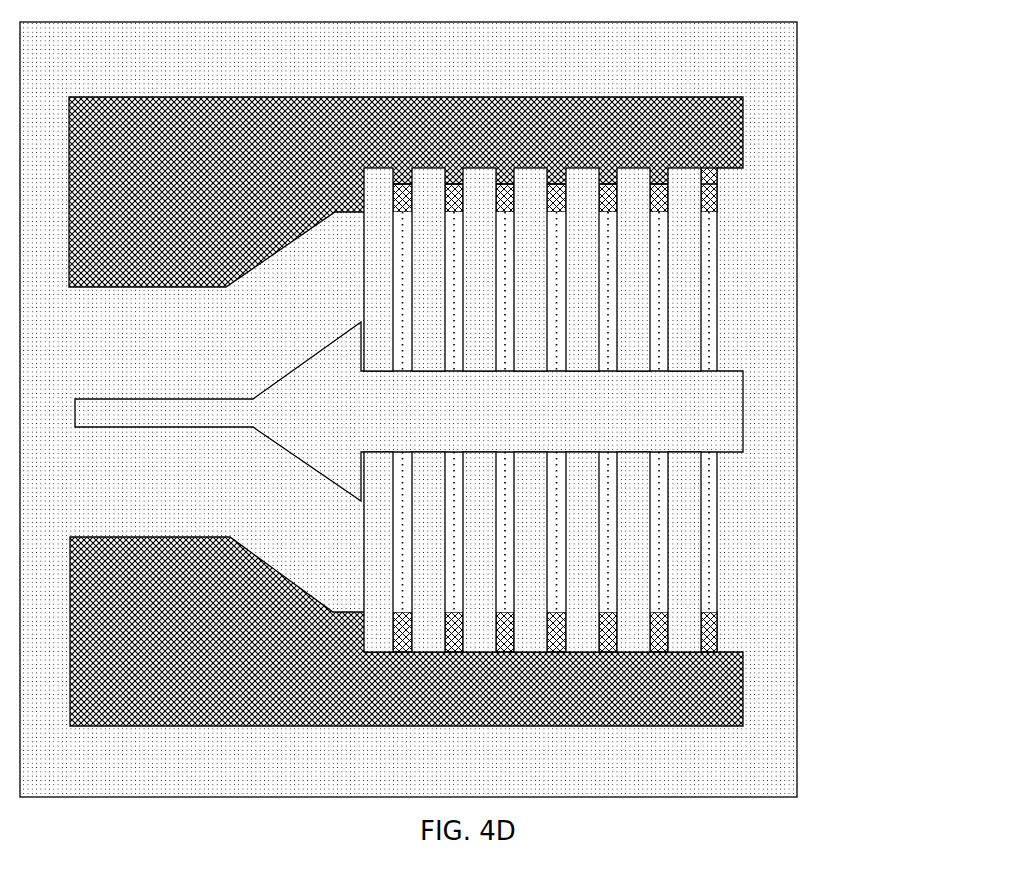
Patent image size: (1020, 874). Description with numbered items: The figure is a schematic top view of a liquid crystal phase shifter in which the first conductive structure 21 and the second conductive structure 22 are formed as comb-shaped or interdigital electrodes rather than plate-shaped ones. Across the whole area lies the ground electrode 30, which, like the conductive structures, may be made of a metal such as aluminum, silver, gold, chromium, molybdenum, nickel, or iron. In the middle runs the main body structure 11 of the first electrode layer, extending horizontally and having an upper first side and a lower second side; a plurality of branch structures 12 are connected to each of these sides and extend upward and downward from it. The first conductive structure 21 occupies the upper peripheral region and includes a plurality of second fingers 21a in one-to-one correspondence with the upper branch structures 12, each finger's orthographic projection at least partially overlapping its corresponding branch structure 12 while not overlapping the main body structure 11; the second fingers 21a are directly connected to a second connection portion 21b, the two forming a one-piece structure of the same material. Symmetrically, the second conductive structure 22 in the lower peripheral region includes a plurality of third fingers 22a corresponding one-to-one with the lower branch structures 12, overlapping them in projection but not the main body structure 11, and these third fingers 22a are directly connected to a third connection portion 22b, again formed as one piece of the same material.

The ground electrode 30 is at (768, 322).
The main body structure 11 is at (718, 412).
The branch structures 12 is at (720, 280).
The first conductive structure 21 is at (477, 159).
The second fingers 21a is at (600, 182).
The second connection portion 21b is at (505, 128).
The second conductive structure 22 is at (468, 660).
The third fingers 22a is at (603, 650).
The third connection portion 22b is at (530, 673).